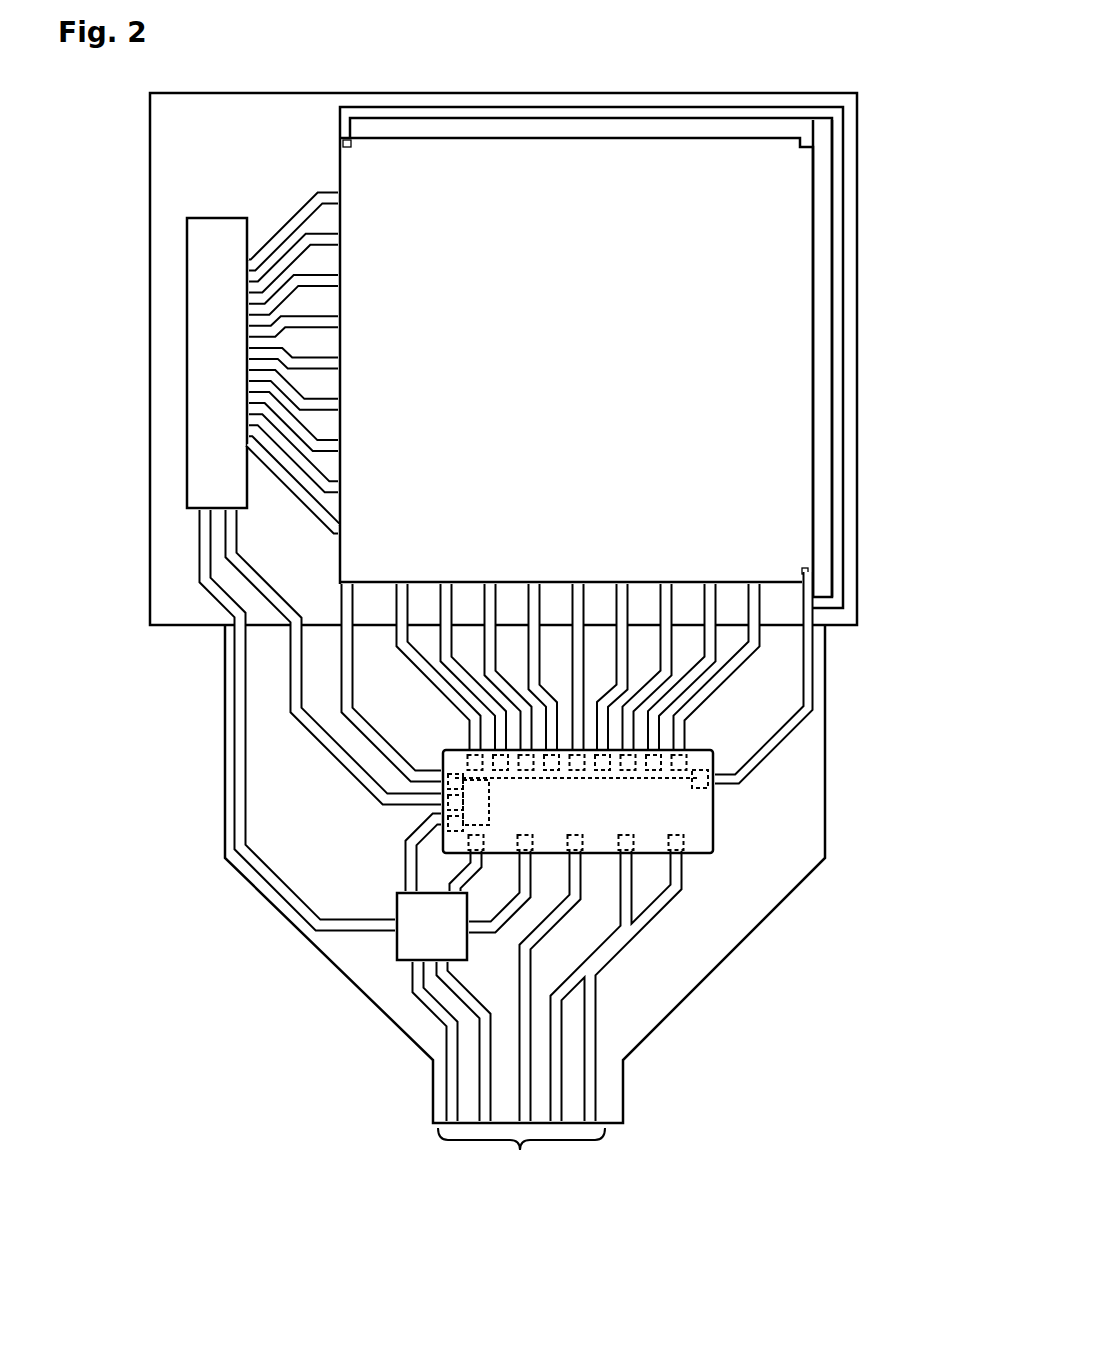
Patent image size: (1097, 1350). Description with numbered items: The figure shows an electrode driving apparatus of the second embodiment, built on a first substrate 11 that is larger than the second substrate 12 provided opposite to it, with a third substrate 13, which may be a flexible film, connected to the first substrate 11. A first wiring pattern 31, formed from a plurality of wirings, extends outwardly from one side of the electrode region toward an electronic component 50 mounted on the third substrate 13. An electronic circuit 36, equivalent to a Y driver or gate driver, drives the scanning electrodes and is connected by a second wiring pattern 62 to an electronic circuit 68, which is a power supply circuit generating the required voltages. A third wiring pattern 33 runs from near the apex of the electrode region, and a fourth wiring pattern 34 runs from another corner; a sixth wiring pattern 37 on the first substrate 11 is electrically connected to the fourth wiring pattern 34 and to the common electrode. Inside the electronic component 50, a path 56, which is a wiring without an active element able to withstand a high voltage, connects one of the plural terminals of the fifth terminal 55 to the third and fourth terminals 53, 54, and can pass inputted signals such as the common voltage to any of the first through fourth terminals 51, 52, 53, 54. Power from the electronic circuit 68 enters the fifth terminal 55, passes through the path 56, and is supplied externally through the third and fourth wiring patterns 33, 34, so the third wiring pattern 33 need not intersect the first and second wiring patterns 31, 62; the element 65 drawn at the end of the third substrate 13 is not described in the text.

The first substrate 11 is at (838, 197).
The second substrate 12 is at (797, 163).
The third substrate 13 is at (760, 905).
The first wiring pattern 31 is at (762, 584).
The third wiring pattern 33 is at (347, 683).
The fourth wiring pattern 34 is at (803, 663).
The electronic circuit 36 is at (210, 333).
The sixth wiring pattern 37 is at (835, 230).
The electronic component 50 is at (698, 826).
The first terminal 51 is at (588, 745).
The second terminal 52 is at (443, 812).
The third terminal 53 is at (443, 758).
The fourth terminal 54 is at (712, 772).
The fifth terminal 55 is at (560, 905).
The path 56 is at (490, 803).
The second wiring pattern 62 is at (345, 188).
The external connection terminals 65 is at (521, 1156).
The electronic circuit 68 is at (410, 950).